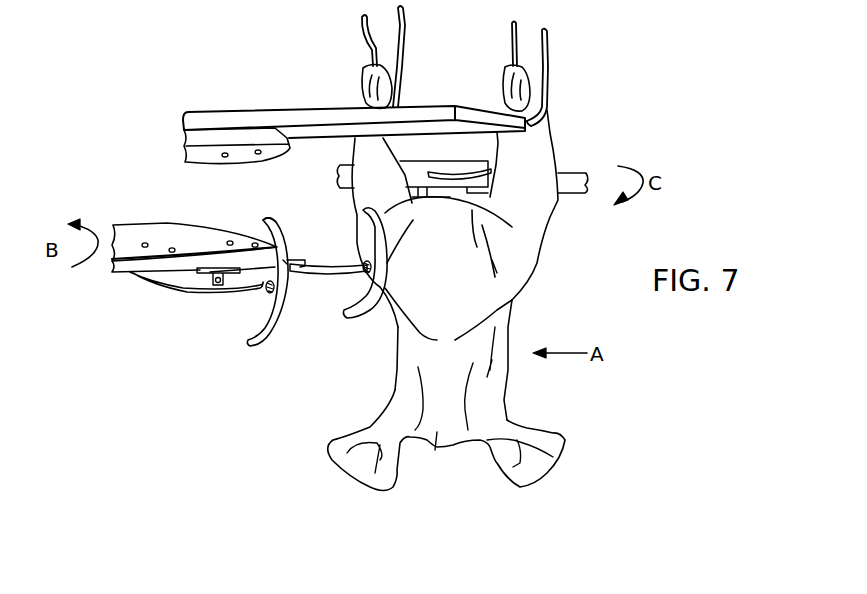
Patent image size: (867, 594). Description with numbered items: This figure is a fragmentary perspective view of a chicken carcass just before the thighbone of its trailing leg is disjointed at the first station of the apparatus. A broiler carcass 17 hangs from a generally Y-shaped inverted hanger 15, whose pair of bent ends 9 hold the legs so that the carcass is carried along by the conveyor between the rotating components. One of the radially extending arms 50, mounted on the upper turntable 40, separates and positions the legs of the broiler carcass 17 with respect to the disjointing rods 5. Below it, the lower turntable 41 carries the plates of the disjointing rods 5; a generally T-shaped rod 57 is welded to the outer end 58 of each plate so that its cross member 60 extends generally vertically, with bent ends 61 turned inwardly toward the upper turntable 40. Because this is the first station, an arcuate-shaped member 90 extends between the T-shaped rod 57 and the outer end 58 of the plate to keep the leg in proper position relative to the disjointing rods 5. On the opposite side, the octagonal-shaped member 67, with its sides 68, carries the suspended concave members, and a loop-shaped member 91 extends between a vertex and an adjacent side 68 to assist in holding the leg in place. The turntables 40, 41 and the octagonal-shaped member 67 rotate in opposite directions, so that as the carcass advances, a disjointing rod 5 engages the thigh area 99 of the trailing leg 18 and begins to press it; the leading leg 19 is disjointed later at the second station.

The disjointing rod 5 is at (234, 324).
The bent end 9 is at (545, 106).
The hanger 15 is at (403, 43).
The broiler carcass 17 is at (435, 452).
The trailing leg 18 is at (532, 162).
The leading leg 19 is at (372, 149).
The upper turntable 40 is at (200, 156).
The lower turntable 41 is at (195, 235).
The arm 50 is at (282, 121).
The T-shaped rod 57 is at (325, 266).
The outer end 58 is at (192, 274).
The cross member 60 is at (254, 347).
The bent end 61 is at (265, 221).
The octagonal-shaped member 67 is at (333, 178).
The side 68 is at (568, 179).
The arcuate-shaped member 90 is at (150, 285).
The loop-shaped member 91 is at (444, 172).
The thigh area 99 is at (516, 255).